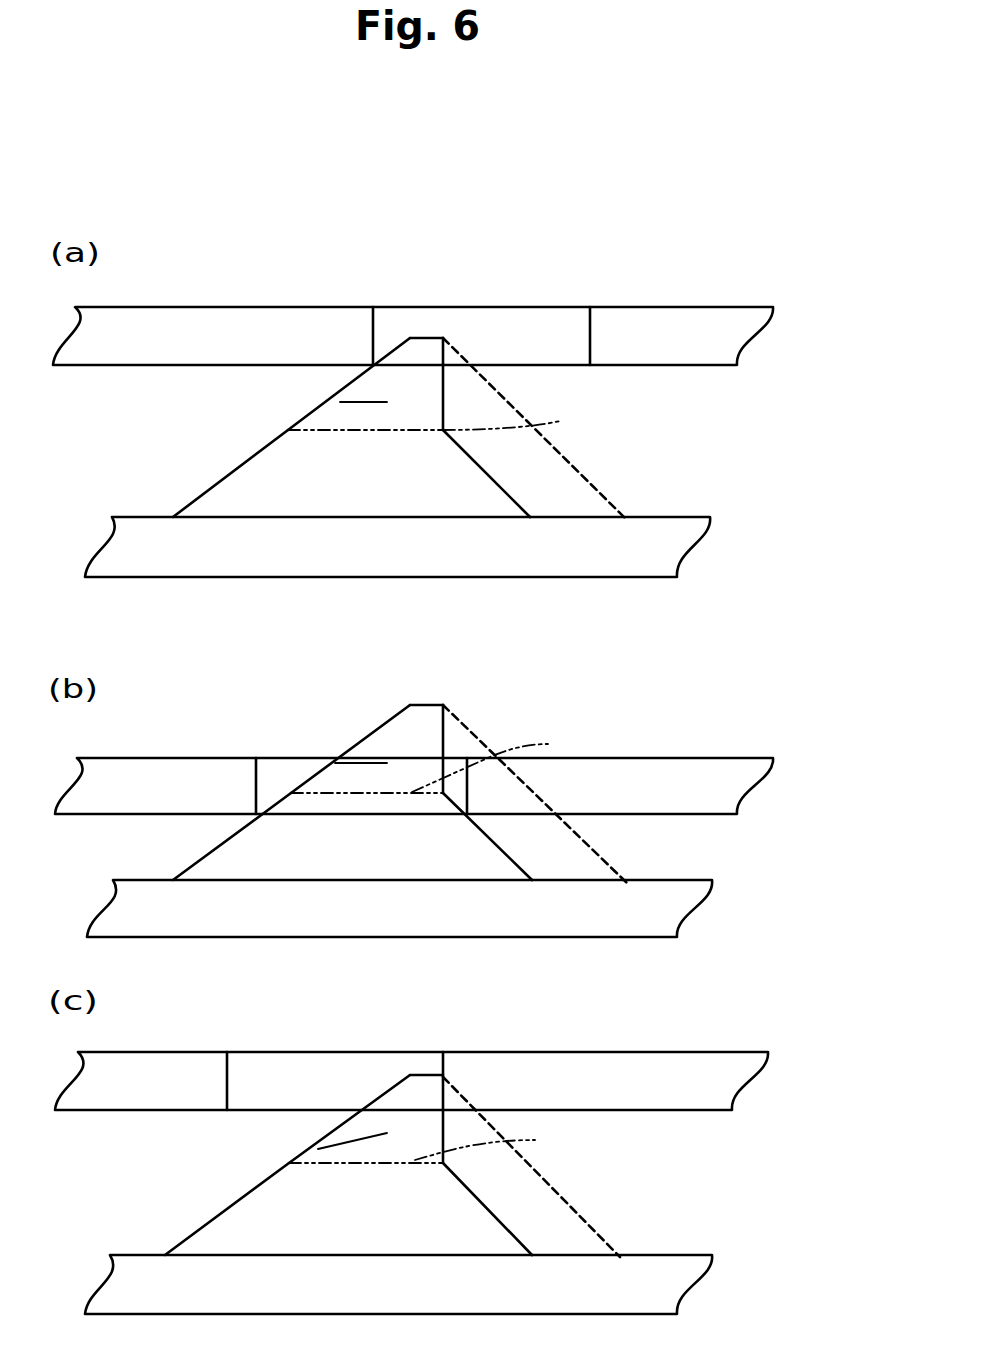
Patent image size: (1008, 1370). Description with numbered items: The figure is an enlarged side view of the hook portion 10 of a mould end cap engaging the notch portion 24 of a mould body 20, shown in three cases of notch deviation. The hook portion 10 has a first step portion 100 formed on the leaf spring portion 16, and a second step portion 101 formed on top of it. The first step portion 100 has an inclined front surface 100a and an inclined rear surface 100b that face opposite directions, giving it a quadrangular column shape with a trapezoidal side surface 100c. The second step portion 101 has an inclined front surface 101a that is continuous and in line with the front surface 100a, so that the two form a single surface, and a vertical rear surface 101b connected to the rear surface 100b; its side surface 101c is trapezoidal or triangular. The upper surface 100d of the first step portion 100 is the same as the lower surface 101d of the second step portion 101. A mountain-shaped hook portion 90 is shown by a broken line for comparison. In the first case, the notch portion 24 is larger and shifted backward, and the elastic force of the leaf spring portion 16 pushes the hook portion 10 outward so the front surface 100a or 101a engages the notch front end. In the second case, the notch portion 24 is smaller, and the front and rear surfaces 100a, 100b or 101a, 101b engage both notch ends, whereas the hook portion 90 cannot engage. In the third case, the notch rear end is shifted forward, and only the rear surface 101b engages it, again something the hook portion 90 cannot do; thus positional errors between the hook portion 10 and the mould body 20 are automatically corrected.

In FIG. 6A, the hook portion 10 is at (408, 328).
In FIG. 6B, the hook portion 10 is at (408, 691).
In FIG. 6C, the hook portion 10 is at (408, 1063).
In FIG. 6A, the leaf spring portion 16 is at (480, 563).
In FIG. 6B, the leaf spring portion 16 is at (482, 925).
In FIG. 6C, the leaf spring portion 16 is at (480, 1298).
In FIG. 6A, the mould body 20 is at (641, 295).
In FIG. 6B, the mould body 20 is at (641, 741).
In FIG. 6C, the mould body 20 is at (640, 1042).
In FIG. 6A, the notch portion 24 is at (590, 342).
In FIG. 6B, the notch portion 24 is at (257, 803).
In FIG. 6C, the notch portion 24 is at (228, 1096).
In FIG. 6A, the hook portion having a mountain-like shape 90 is at (607, 497).
In FIG. 6B, the hook portion having a mountain-like shape 90 is at (607, 860).
In FIG. 6C, the hook portion having a mountain-like shape 90 is at (605, 1232).
In FIG. 6A, the first step portion 100 is at (284, 478).
In FIG. 6B, the first step portion 100 is at (268, 857).
In FIG. 6C, the first step portion 100 is at (268, 1230).
In FIG. 6A, the front surface of the first step portion 100a is at (215, 486).
In FIG. 6B, the front surface of the first step portion 100a is at (187, 866).
In FIG. 6C, the front surface of the first step portion 100a is at (183, 1240).
In FIG. 6A, the rear surface of the first step portion 100b is at (515, 498).
In FIG. 6B, the rear surface of the first step portion 100b is at (513, 862).
In FIG. 6C, the rear surface of the first step portion 100b is at (512, 1232).
In FIG. 6A, the trapezoidal side surface of the first step portion 100c is at (430, 490).
In FIG. 6B, the trapezoidal side surface of the first step portion 100c is at (430, 850).
In FIG. 6C, the trapezoidal side surface of the first step portion 100c is at (427, 1222).
In FIG. 6A, the upper surface of the first step portion 100d is at (333, 432).
In FIG. 6B, the upper surface of the first step portion 100d is at (340, 793).
In FIG. 6C, the upper surface of the first step portion 100d is at (330, 1163).
In FIG. 6A, the second step portion 101 is at (423, 358).
In FIG. 6B, the second step portion 101 is at (423, 727).
In FIG. 6C, the second step portion 101 is at (423, 1096).
In FIG. 6A, the front surface of the second step portion 101a is at (365, 365).
In FIG. 6B, the front surface of the second step portion 101a is at (366, 738).
In FIG. 6C, the front surface of the second step portion 101a is at (372, 1098).
In FIG. 6A, the rear surface of the second step portion 101b is at (445, 400).
In FIG. 6B, the rear surface of the second step portion 101b is at (445, 757).
In FIG. 6C, the rear surface of the second step portion 101b is at (446, 1125).
In FIG. 6A, the side surface of the second step portion 101c is at (340, 402).
In FIG. 6B, the side surface of the second step portion 101c is at (335, 763).
In FIG. 6C, the side surface of the second step portion 101c is at (318, 1149).
In FIG. 6A, the lower surface of the second step portion 101d is at (528, 422).
In FIG. 6B, the lower surface of the second step portion 101d is at (512, 761).
In FIG. 6C, the lower surface of the second step portion 101d is at (508, 1140).